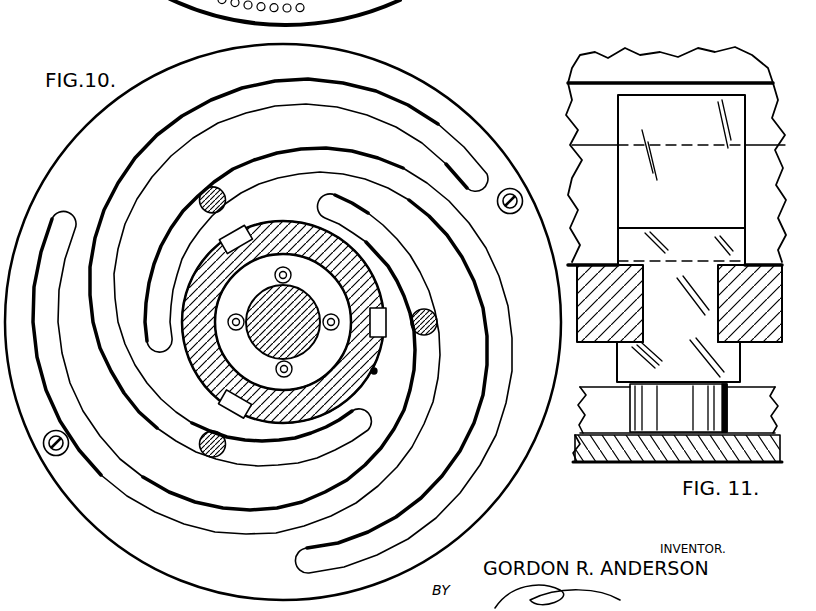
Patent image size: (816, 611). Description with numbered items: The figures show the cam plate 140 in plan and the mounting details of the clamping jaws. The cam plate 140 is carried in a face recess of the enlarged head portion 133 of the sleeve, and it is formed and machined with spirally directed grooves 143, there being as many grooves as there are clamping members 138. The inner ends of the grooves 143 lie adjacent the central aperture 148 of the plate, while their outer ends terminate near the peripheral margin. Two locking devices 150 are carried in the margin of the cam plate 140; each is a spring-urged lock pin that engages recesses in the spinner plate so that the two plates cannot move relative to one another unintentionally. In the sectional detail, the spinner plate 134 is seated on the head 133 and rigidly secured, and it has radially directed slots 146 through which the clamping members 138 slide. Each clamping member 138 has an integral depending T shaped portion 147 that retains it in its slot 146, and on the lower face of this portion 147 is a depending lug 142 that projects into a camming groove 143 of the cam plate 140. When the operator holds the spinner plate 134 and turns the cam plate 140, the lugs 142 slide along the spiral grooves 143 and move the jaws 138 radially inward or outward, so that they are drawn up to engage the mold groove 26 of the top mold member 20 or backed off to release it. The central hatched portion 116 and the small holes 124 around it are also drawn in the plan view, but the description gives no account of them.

In FIG. 10, the cam plate 140 is at (422, 95).
In FIG. 11, the cam plate 140 is at (603, 457).
In FIG. 10, the spirally directed grooves 143 is at (500, 297).
In FIG. 11, the spirally directed grooves 143 is at (593, 423).
In FIG. 10, the enlarged head portion 133 is at (212, 384).
In FIG. 10, the hub 116 is at (305, 306).
In FIG. 10, the screw holes 124 is at (333, 333).
In FIG. 10, the central aperture 148 is at (377, 371).
In FIG. 10, the depending lugs 142 is at (206, 190).
In FIG. 11, the depending lugs 142 is at (650, 410).
In FIG. 10, the locking device 150 is at (521, 194).
In FIG. 11, the top mold member 20 is at (702, 57).
In FIG. 11, the mold groove 26 is at (606, 90).
In FIG. 11, the spinner plate 134 is at (605, 263).
In FIG. 11, the clamping members 138 is at (682, 193).
In FIG. 11, the grooves or slots 146 is at (645, 320).
In FIG. 11, the T shaped portion 147 is at (630, 368).